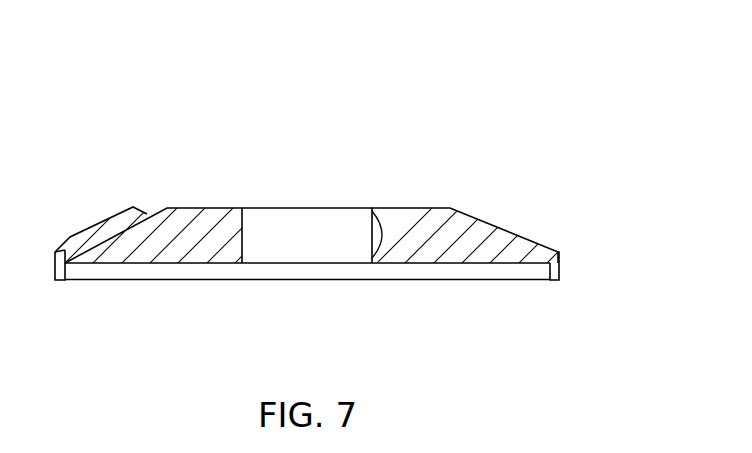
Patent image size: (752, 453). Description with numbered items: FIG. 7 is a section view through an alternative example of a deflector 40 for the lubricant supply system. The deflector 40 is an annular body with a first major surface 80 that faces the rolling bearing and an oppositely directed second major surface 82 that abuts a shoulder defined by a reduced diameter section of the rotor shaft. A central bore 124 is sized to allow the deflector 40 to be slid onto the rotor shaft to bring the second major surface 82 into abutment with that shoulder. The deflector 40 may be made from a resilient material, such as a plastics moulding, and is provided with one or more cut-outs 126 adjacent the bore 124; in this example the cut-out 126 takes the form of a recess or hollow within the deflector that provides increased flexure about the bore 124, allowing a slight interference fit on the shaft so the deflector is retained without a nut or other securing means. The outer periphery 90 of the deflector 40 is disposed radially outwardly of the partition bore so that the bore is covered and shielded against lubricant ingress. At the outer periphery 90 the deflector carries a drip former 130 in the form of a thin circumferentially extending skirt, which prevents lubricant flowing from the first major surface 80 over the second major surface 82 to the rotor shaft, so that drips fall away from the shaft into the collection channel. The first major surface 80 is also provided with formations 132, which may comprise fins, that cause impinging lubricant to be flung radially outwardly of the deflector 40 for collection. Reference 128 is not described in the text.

The deflector 40 is at (556, 128).
The first major surface 80 is at (517, 236).
The second major surface 82 is at (487, 265).
The outer periphery 90 is at (560, 270).
The bore 124 is at (290, 223).
The cut-out 126 is at (380, 226).
The left flange 128 is at (95, 281).
The drip former 130 is at (423, 281).
The formations 132 is at (112, 215).